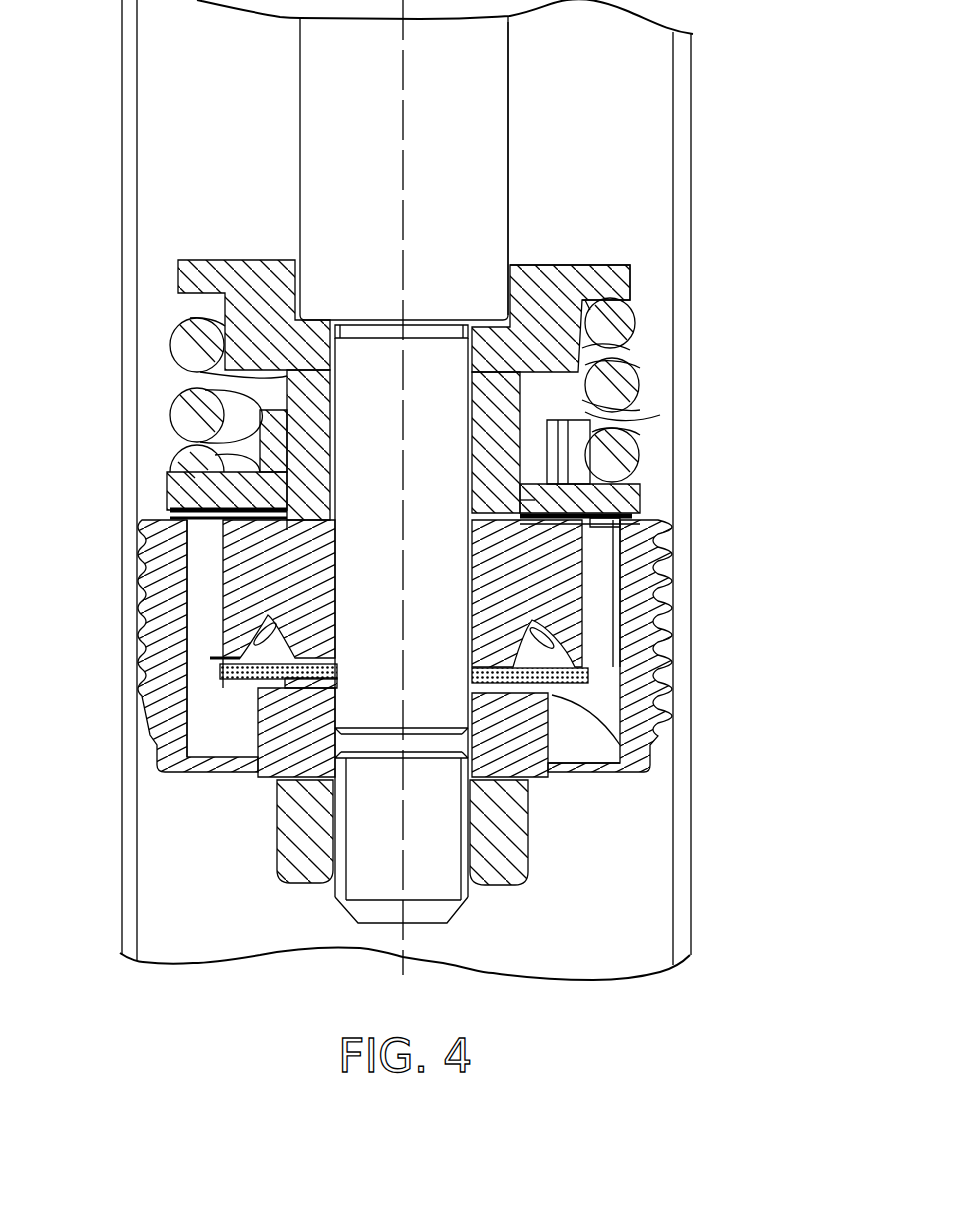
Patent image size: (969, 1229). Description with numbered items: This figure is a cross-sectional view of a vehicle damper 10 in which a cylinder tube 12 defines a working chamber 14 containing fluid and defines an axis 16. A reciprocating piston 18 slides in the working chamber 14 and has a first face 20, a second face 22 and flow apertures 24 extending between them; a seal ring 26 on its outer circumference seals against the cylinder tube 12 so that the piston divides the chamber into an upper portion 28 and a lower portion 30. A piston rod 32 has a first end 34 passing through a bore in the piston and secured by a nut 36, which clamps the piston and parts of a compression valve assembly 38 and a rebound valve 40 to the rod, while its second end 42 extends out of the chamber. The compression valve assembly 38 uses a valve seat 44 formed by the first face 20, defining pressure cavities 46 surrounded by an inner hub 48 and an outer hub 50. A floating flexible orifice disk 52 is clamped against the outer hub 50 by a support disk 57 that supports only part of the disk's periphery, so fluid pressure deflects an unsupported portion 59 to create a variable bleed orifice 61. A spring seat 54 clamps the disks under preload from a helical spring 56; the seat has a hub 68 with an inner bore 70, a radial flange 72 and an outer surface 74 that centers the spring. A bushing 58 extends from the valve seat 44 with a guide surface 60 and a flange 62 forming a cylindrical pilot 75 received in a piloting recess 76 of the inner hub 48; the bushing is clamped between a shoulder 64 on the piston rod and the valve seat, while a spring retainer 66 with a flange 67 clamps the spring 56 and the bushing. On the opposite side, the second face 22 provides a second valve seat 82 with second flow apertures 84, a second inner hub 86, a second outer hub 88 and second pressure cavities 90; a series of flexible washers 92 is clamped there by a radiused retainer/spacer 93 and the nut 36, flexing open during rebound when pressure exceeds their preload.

The vehicle damper 10 is at (705, 85).
The cylinder tube 12 is at (680, 172).
The working chamber 14 is at (655, 218).
The axis 16 is at (405, 152).
The piston 18 is at (665, 655).
The first face 20 is at (520, 555).
The second face 22 is at (605, 675).
The flow apertures 24 is at (605, 625).
The seal ring 26 is at (665, 592).
The upper portion 28 is at (655, 150).
The lower portion 30 is at (640, 828).
The piston rod 32 is at (485, 160).
The first end 34 is at (455, 920).
The nut 36 is at (520, 880).
The compression valve assembly 38 is at (652, 472).
The rebound valve 40 is at (230, 738).
The second end 42 is at (318, 207).
The valve seat 44 is at (630, 548).
The pressure cavities 46 is at (235, 520).
The inner hub 48 is at (215, 550).
The outer hub 50 is at (240, 535).
The orifice disk 52 is at (630, 530).
The spring seat 54 is at (640, 490).
The spring 56 is at (640, 318).
The support disk 57 is at (620, 516).
The bushing 58 is at (480, 400).
The unsupported portion 59 is at (255, 518).
The guide surface 60 is at (650, 422).
The bleed orifice 61 is at (155, 505).
The flange 62 is at (320, 560).
The shoulder 64 is at (340, 322).
The spring retainer 66 is at (530, 299).
The flange 67 is at (630, 283).
The hub 68 is at (530, 470).
The inner bore 70 is at (515, 495).
The flange 72 is at (230, 485).
The outer surface 74 is at (555, 443).
The cylindrical pilot 75 is at (510, 520).
The piloting recess 76 is at (320, 545).
The second valve seat 82 is at (480, 665).
The second flow apertures 84 is at (290, 640).
The second inner hub 86 is at (330, 666).
The second outer hub 88 is at (170, 700).
The second pressure cavities 90 is at (280, 645).
The flexible washers 92 is at (590, 683).
The retainer/spacer 93 is at (270, 775).